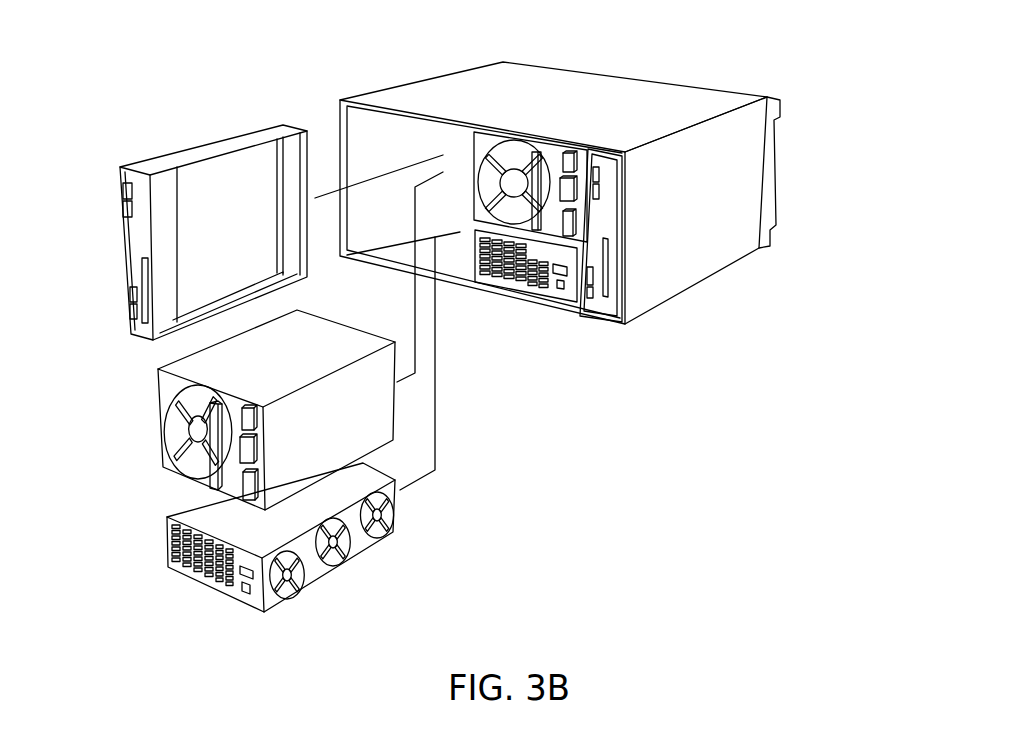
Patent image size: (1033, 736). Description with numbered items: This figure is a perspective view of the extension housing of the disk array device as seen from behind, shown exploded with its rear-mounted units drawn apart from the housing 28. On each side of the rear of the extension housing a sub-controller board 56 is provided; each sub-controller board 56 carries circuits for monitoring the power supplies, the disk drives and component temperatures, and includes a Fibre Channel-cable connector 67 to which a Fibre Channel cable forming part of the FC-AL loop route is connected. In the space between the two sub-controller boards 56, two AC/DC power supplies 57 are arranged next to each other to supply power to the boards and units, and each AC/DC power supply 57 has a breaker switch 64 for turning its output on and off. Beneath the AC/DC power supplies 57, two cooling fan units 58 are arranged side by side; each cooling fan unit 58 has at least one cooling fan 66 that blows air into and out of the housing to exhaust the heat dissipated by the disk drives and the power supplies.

The chassis 28 is at (647, 90).
The sub-controller board 56 is at (170, 158).
The AC/DC power supply 57 is at (484, 142).
The cooling fan unit 58 is at (245, 597).
The breaker switch 64 is at (247, 484).
The cooling fan 66 is at (293, 587).
The Fibre Channel-cable connector 67 is at (120, 205).